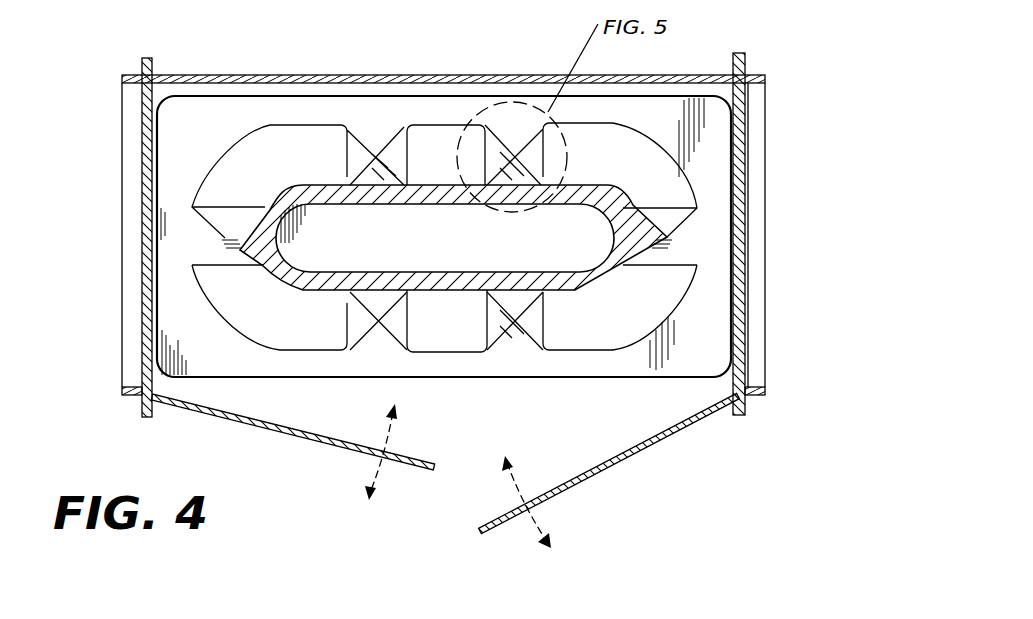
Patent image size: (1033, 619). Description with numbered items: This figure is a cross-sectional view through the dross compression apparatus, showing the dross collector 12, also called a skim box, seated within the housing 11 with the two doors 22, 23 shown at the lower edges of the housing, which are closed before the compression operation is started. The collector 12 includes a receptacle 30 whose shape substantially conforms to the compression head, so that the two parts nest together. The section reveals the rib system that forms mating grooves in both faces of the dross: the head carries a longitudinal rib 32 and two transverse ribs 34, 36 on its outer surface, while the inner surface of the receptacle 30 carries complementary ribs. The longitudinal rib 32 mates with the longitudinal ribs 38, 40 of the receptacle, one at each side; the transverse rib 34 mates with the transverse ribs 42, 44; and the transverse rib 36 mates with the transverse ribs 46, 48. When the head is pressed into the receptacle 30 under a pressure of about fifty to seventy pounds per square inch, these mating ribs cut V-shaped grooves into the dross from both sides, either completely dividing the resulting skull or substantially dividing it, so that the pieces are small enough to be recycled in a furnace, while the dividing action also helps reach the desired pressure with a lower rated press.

The housing 11 is at (768, 336).
The dross collector 12 is at (507, 377).
The door 22 is at (334, 446).
The door 23 is at (643, 446).
The receptacle 30 is at (330, 125).
The longitudinal rib 32 is at (243, 263).
The transverse rib 34 is at (355, 173).
The transverse rib 36 is at (550, 187).
The longitudinal rib 38 is at (236, 188).
The longitudinal rib 40 is at (700, 200).
The transverse rib 42 is at (417, 125).
The transverse rib 44 is at (392, 337).
The transverse rib 46 is at (468, 125).
The transverse rib 48 is at (525, 330).